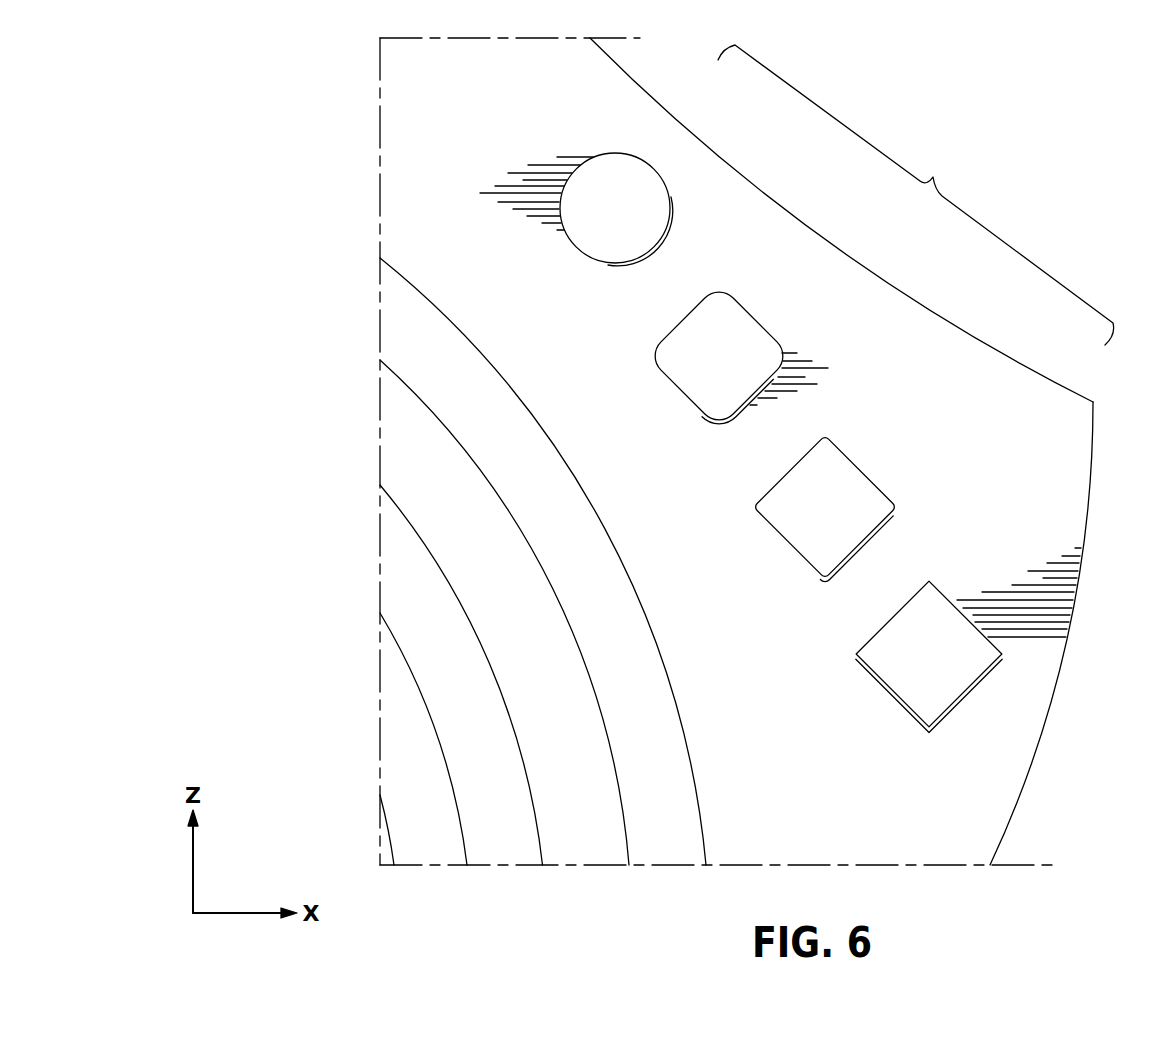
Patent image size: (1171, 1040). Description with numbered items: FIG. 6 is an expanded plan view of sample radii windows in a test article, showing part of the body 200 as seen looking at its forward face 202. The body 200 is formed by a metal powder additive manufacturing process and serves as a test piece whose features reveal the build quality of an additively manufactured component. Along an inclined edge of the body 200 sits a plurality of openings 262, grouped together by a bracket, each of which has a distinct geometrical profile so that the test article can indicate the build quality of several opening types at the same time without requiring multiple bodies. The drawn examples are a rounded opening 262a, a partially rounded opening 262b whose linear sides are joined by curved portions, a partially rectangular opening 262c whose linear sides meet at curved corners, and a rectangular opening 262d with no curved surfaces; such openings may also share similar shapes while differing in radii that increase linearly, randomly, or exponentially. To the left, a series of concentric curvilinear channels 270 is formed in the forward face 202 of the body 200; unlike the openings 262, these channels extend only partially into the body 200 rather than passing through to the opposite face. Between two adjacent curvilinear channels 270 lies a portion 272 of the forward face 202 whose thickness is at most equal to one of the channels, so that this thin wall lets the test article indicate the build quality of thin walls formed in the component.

The body 200 is at (407, 180).
The forward face 202 is at (824, 777).
The plurality of openings 262 is at (916, 195).
The rounded opening 262a is at (645, 200).
The partially rounded opening 262b is at (738, 335).
The partially rectangular opening 262c is at (837, 497).
The rectangular opening 262d is at (967, 665).
The curvilinear channels 270 is at (499, 849).
The portion of forward face 272 is at (582, 827).